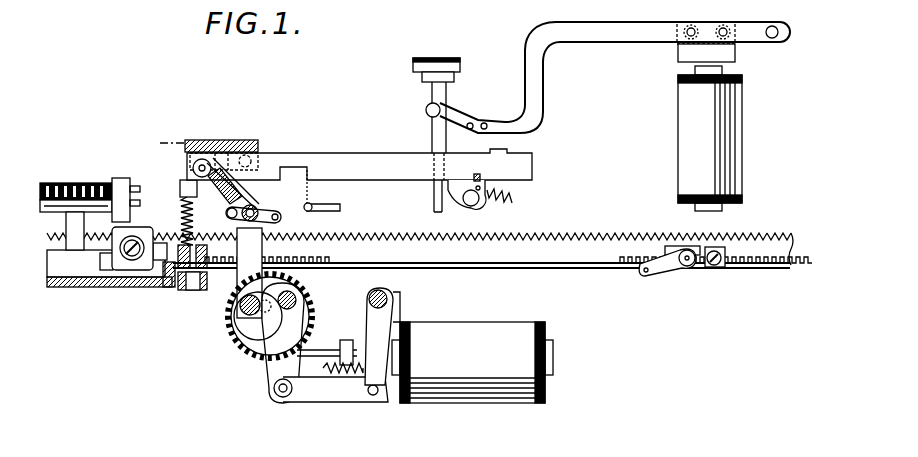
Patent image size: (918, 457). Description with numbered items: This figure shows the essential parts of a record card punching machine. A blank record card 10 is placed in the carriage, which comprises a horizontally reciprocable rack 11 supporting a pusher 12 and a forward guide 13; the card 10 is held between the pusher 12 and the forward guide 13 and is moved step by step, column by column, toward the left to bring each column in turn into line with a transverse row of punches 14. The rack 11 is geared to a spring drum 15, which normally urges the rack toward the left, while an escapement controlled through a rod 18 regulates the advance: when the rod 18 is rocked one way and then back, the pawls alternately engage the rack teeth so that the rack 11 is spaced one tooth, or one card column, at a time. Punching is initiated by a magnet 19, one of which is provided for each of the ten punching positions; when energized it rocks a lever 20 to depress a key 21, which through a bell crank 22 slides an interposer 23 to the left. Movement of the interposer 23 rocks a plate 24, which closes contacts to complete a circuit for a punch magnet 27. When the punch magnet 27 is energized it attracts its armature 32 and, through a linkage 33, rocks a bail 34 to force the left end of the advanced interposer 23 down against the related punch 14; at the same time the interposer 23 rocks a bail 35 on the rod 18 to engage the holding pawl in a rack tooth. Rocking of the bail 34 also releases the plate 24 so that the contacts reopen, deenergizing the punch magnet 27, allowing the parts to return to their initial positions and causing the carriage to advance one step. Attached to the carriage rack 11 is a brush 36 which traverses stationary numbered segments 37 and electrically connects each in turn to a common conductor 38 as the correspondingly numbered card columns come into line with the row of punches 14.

The record card 10 is at (560, 268).
The rack 11 is at (531, 242).
The pusher 12 is at (664, 270).
The forward guide 13 is at (168, 266).
The punches 14 is at (181, 190).
The spring drum 15 is at (251, 331).
The rod 18 is at (256, 212).
The magnet 19 is at (690, 124).
The lever 20 is at (603, 40).
The key 21 is at (430, 138).
The bell crank 22 is at (463, 201).
The interposer 23 is at (273, 166).
The plate 24 is at (316, 197).
The punch magnet 27 is at (454, 337).
The armature 32 is at (372, 333).
The linkage 33 is at (247, 290).
The bail 34 is at (197, 140).
The bail 35 is at (232, 200).
The brush 36 is at (132, 206).
The numbered segments 37 is at (46, 186).
The common conductor 38 is at (101, 256).